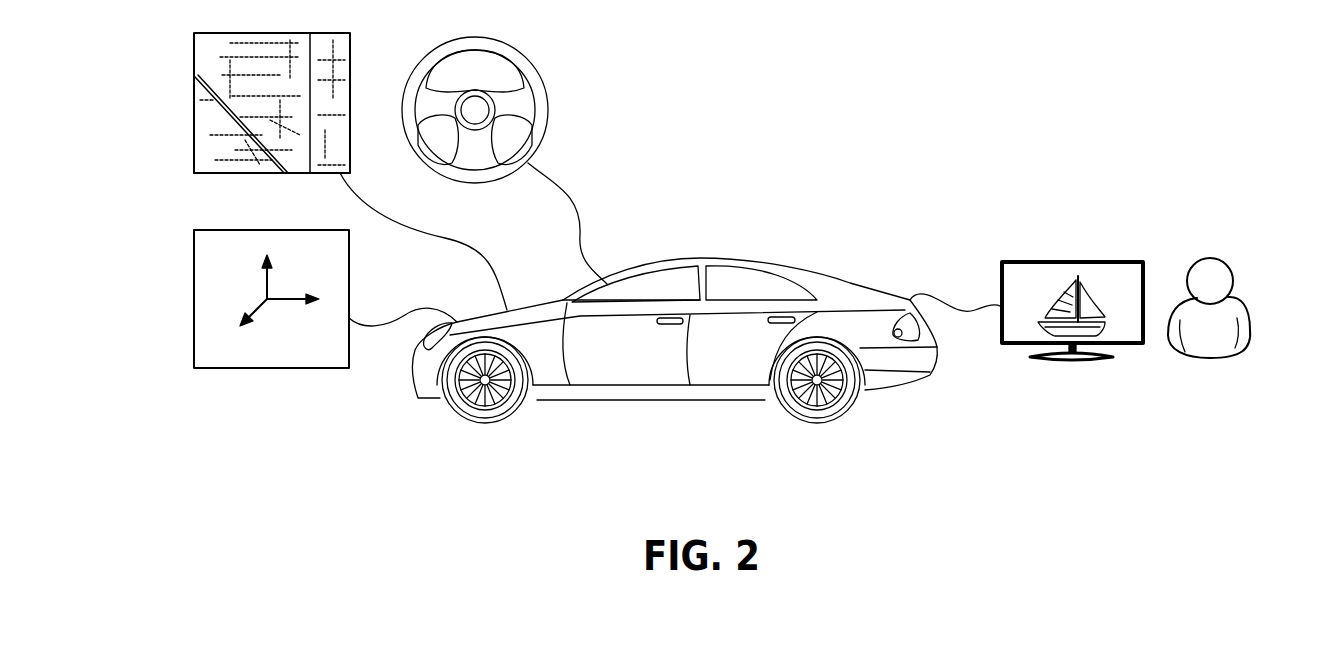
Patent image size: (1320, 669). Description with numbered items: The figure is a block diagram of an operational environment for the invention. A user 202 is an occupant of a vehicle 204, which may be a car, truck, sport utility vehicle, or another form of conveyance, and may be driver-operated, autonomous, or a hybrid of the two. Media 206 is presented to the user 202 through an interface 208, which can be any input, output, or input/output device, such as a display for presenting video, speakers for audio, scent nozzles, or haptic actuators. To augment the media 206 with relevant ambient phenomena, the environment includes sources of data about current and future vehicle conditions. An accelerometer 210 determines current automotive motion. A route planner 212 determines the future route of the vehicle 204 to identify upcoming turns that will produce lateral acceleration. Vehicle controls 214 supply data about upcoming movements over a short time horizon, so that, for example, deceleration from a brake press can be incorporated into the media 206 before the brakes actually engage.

The user 202 is at (1243, 298).
The vehicle 204 is at (680, 400).
The media 206 is at (1053, 278).
The interface 208 is at (1093, 259).
The accelerometer 210 is at (194, 294).
The route planner 212 is at (194, 96).
The vehicle controls 214 is at (543, 70).